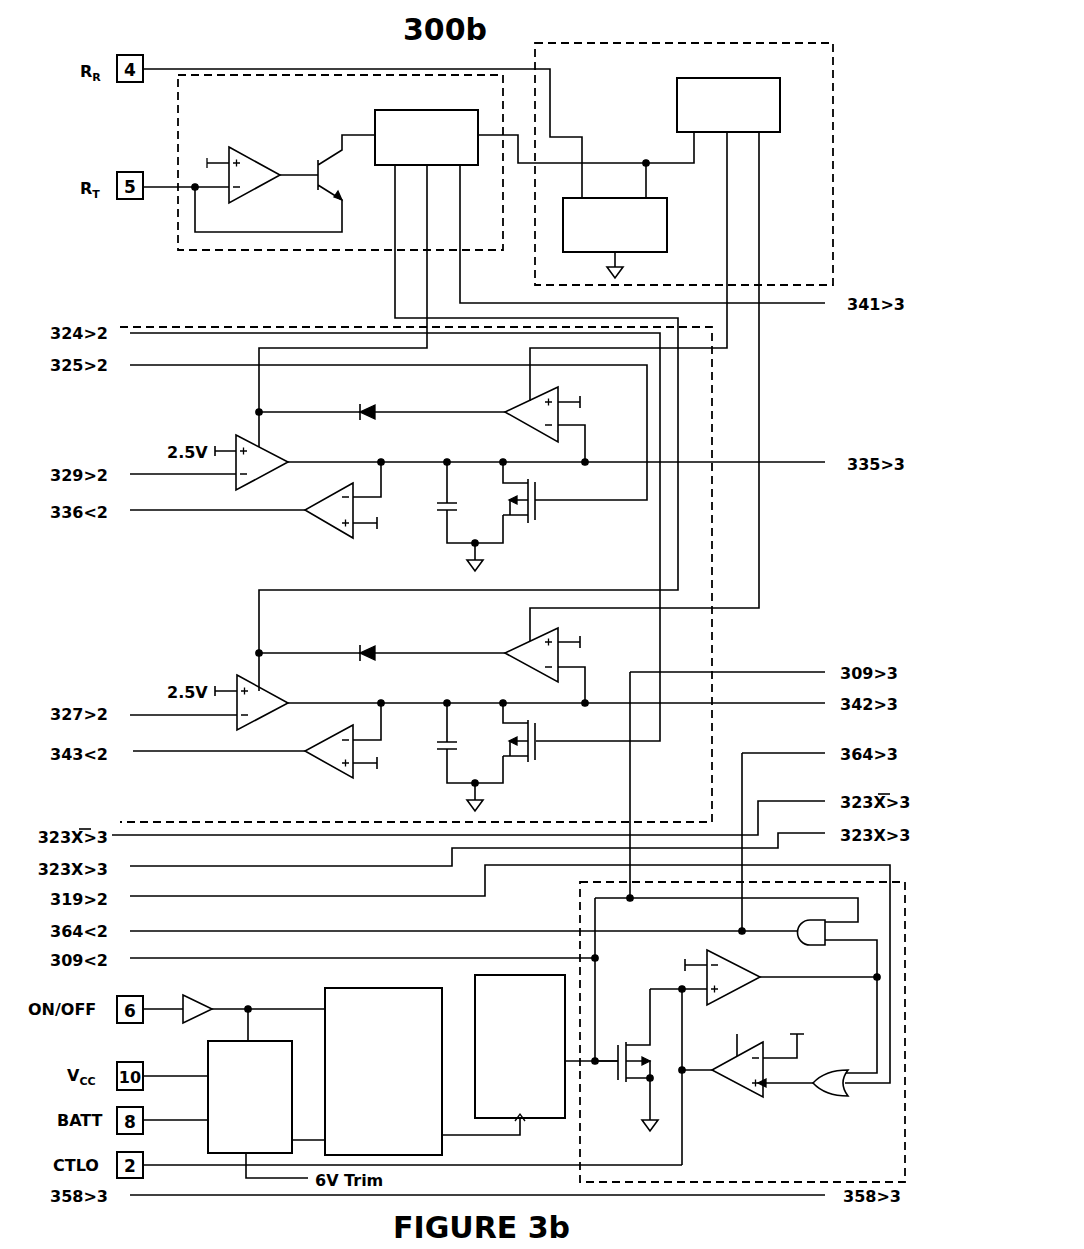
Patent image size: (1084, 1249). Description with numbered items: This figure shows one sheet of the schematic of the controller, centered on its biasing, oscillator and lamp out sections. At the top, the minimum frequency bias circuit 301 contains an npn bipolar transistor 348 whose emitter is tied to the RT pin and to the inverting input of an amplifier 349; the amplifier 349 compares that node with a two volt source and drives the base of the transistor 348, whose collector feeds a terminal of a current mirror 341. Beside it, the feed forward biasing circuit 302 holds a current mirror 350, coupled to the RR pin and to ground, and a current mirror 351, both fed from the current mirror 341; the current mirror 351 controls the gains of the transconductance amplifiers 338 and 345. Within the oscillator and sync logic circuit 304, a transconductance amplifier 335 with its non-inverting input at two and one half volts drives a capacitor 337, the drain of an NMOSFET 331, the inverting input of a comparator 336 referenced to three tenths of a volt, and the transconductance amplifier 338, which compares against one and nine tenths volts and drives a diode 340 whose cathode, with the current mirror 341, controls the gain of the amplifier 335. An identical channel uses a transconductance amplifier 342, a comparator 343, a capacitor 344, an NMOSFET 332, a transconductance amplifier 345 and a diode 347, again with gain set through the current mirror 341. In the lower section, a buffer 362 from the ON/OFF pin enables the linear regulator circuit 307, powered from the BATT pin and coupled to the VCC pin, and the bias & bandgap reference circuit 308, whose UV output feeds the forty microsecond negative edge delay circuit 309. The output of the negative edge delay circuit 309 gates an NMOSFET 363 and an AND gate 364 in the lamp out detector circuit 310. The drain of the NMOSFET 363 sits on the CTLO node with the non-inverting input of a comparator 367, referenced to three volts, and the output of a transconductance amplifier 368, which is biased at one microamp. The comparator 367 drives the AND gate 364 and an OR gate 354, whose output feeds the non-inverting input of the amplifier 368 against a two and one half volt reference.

The minimum frequency bias circuit 301 is at (283, 257).
The feed forward biasing circuit 302 is at (535, 278).
The oscillator and sync logic circuit 304 is at (208, 325).
The linear regulator circuit 307 is at (205, 1047).
The bias & bandgap reference circuit 308 is at (315, 997).
The negative edge delay circuit 309 is at (470, 977).
The lamp out detector circuit 310 is at (580, 899).
The NMOSFET 331 is at (547, 497).
The NMOSFET 332 is at (547, 738).
The transconductance amplifier 335 is at (275, 462).
The comparator 336 is at (354, 500).
The capacitor 337 is at (455, 516).
The transconductance amplifier 338 is at (552, 423).
The diode 340 is at (380, 402).
The current mirror 341 is at (426, 137).
The transconductance amplifier 342 is at (276, 702).
The comparator 343 is at (354, 740).
The capacitor 344 is at (455, 757).
The transconductance amplifier 345 is at (552, 663).
The diode 347 is at (380, 642).
The npn bipolar transistor 348 is at (318, 160).
The amplifier 349 is at (255, 193).
The current mirror 350 is at (615, 238).
The current mirror 351 is at (728, 105).
The OR gate 354 is at (835, 1071).
The buffer 362 is at (203, 999).
The NMOSFET 363 is at (626, 1060).
The AND gate 364 is at (819, 990).
The comparator 367 is at (763, 974).
The transconductance amplifier 368 is at (748, 1058).